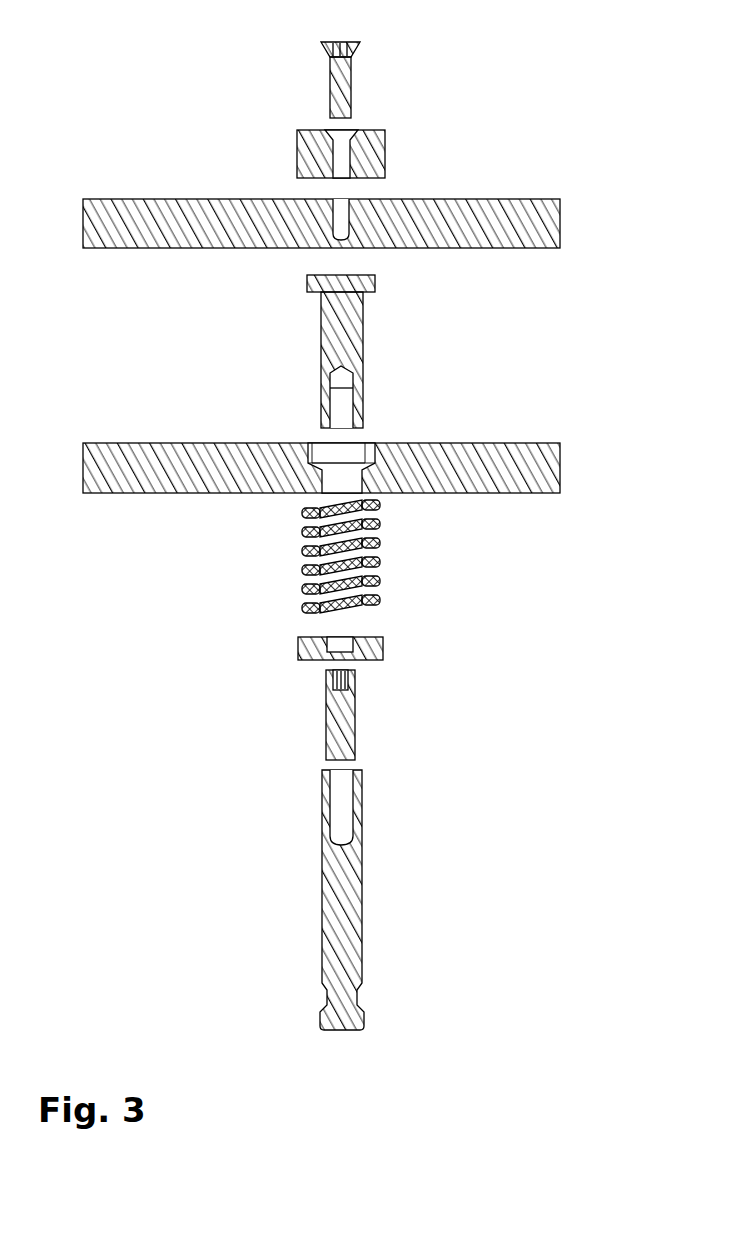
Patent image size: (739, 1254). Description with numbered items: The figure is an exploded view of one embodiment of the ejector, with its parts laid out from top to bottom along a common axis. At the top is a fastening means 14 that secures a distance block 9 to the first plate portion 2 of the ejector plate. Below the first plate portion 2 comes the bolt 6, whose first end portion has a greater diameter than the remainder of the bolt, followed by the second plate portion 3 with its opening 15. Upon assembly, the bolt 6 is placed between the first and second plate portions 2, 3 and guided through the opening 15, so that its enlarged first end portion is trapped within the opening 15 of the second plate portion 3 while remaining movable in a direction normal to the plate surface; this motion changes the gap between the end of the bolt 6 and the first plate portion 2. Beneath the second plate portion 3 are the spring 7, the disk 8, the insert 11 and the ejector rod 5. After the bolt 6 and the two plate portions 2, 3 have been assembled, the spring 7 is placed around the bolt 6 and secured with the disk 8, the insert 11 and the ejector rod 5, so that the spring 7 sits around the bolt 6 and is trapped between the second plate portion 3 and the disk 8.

The first plate portion 2 is at (552, 199).
The second plate portion 3 is at (550, 443).
The ejector rod 5 is at (362, 893).
The bolt 6 is at (362, 336).
The spring 7 is at (380, 578).
The disk 8 is at (385, 652).
The distance block 9 is at (385, 165).
The insert 11 is at (357, 748).
The fastening means 14 is at (355, 95).
The opening 15 is at (318, 443).